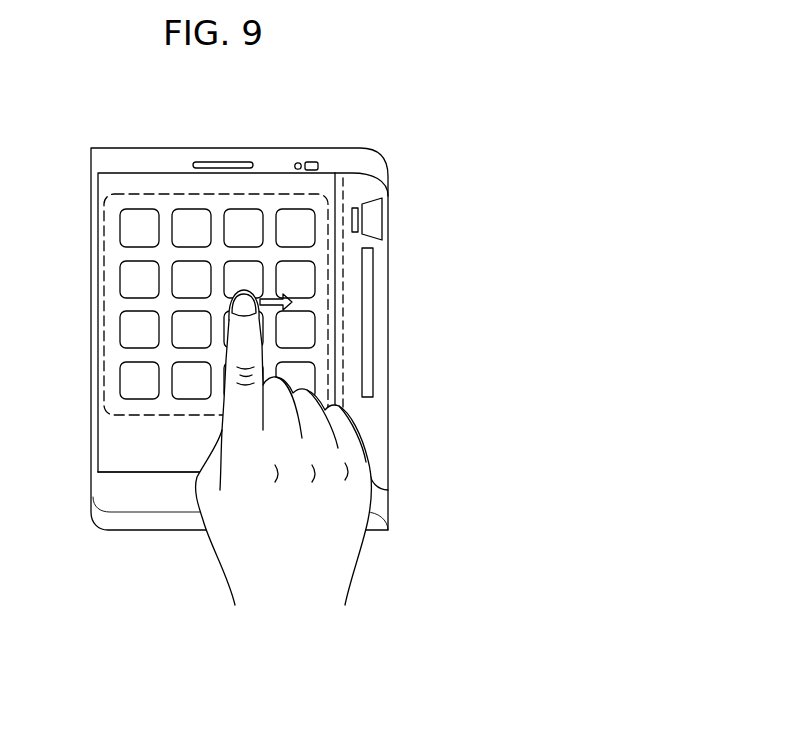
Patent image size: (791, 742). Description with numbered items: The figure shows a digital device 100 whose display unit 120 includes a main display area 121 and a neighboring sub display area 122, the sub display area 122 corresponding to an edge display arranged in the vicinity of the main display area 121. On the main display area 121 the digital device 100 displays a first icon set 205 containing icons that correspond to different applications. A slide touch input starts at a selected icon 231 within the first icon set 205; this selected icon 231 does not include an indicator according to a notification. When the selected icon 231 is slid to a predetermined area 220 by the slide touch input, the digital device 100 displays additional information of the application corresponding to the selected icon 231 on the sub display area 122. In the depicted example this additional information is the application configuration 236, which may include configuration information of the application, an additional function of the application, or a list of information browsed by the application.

The digital device 100 is at (115, 148).
The display unit 120 is at (98, 357).
The main display area 121 is at (137, 443).
The sub display area 122 is at (367, 440).
The first icon set 205 is at (273, 194).
The predetermined area 220 is at (343, 345).
The selected icon 231 is at (257, 279).
The application configuration 236 is at (382, 218).